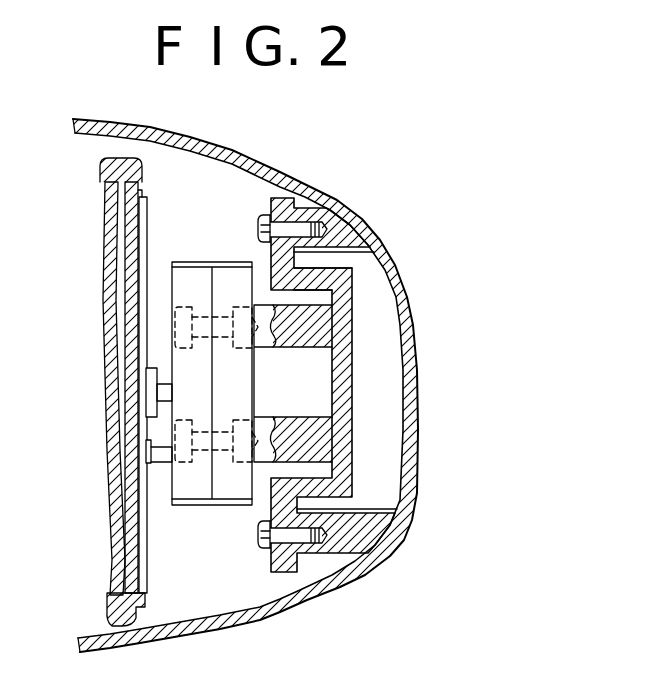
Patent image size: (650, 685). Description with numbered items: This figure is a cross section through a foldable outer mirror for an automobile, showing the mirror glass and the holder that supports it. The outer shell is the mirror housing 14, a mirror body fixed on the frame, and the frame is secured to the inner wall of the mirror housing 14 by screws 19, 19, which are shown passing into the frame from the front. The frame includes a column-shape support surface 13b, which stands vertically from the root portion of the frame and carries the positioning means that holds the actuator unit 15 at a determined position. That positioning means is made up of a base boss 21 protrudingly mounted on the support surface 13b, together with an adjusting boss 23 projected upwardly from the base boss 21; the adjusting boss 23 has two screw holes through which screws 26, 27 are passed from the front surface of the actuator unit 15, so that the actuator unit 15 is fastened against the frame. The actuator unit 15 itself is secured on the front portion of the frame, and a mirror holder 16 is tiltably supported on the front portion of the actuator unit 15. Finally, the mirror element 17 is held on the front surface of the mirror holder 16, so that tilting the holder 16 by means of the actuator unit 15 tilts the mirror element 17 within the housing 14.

The mirror housing 14 is at (233, 158).
The mirror element 17 is at (104, 222).
The mirror holder 16 is at (137, 218).
The actuator unit 15 is at (216, 506).
The screw 27 is at (171, 296).
The screw 26 is at (174, 468).
The support surface 13b is at (352, 348).
The adjusting boss 23 is at (350, 302).
The base boss 21 is at (303, 412).
The screw 19 is at (259, 228).